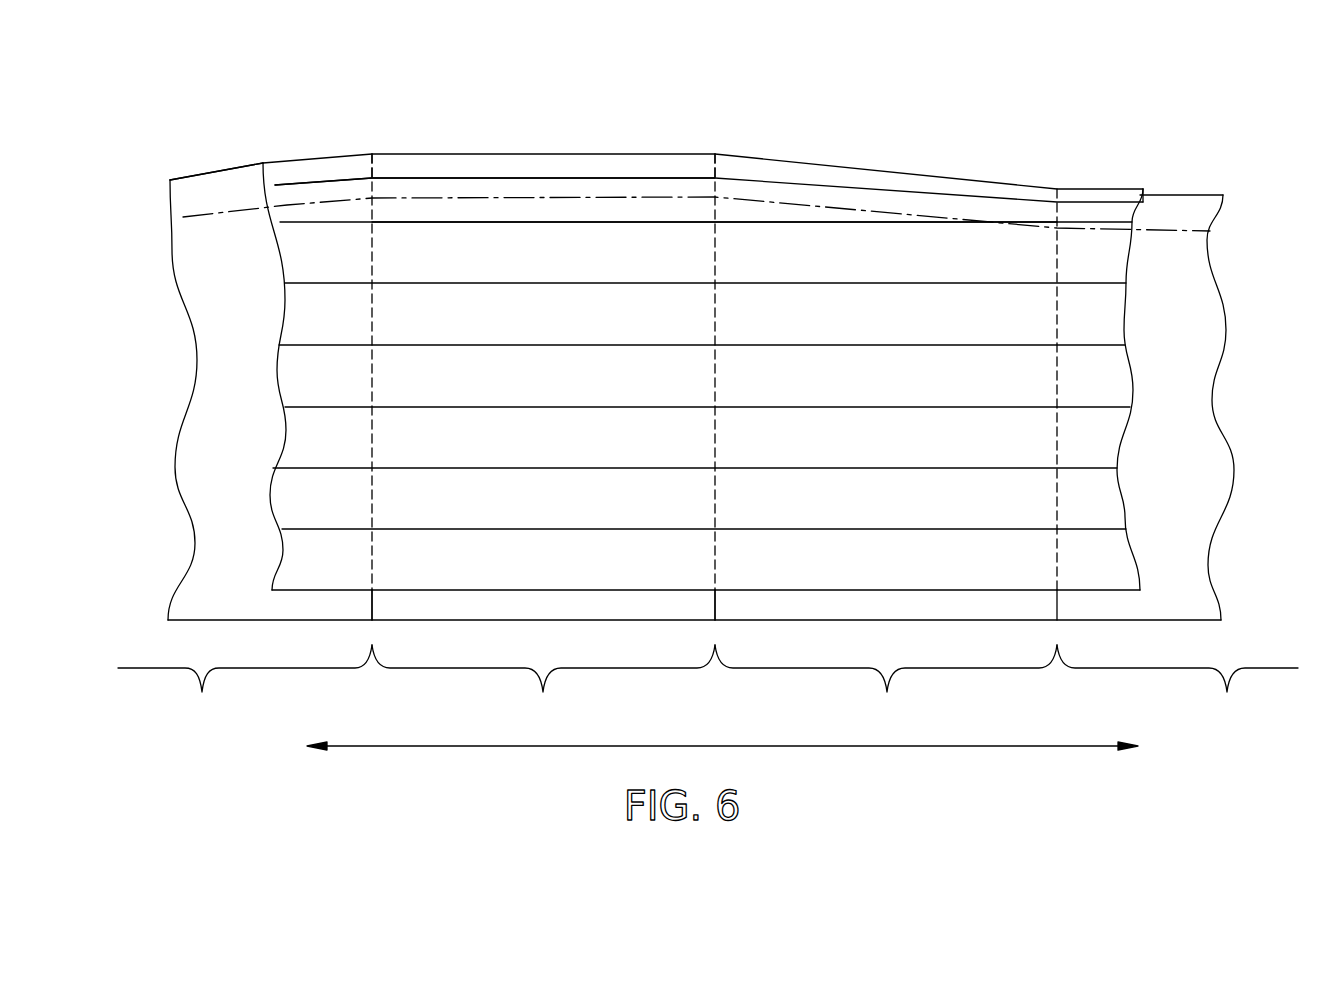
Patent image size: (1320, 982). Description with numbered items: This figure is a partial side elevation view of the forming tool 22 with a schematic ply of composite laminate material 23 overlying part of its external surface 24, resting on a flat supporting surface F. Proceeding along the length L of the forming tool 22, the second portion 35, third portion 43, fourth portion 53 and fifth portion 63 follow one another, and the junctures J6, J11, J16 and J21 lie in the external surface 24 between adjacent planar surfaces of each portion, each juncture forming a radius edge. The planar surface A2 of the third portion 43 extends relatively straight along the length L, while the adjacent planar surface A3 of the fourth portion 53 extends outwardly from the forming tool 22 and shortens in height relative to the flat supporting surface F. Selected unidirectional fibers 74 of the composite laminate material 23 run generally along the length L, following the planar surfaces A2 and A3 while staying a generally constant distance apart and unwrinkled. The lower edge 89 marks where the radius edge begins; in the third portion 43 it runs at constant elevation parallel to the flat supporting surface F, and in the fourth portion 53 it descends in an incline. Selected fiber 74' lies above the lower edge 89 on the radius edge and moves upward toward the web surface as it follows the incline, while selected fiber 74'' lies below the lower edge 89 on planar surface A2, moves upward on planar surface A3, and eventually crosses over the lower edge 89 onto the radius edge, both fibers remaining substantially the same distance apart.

The forming tool 22 is at (210, 572).
The composite laminate material 23 is at (438, 224).
The external surface 24 is at (223, 285).
The second portion 35 is at (200, 690).
The third portion 43 is at (541, 692).
The fourth portion 53 is at (889, 692).
The fifth portion 63 is at (1229, 693).
The fibers 74 is at (699, 404).
The selected fiber 74' is at (664, 105).
The selected fiber 74'' is at (714, 161).
The lower edge 89 is at (290, 203).
The juncture J6 is at (223, 192).
The juncture J11 is at (563, 185).
The juncture J16 is at (830, 182).
The juncture J21 is at (1212, 213).
The planar surface A2 is at (447, 607).
The planar surface A3 is at (883, 605).
The flat supporting surface F is at (350, 636).
The length L is at (638, 737).